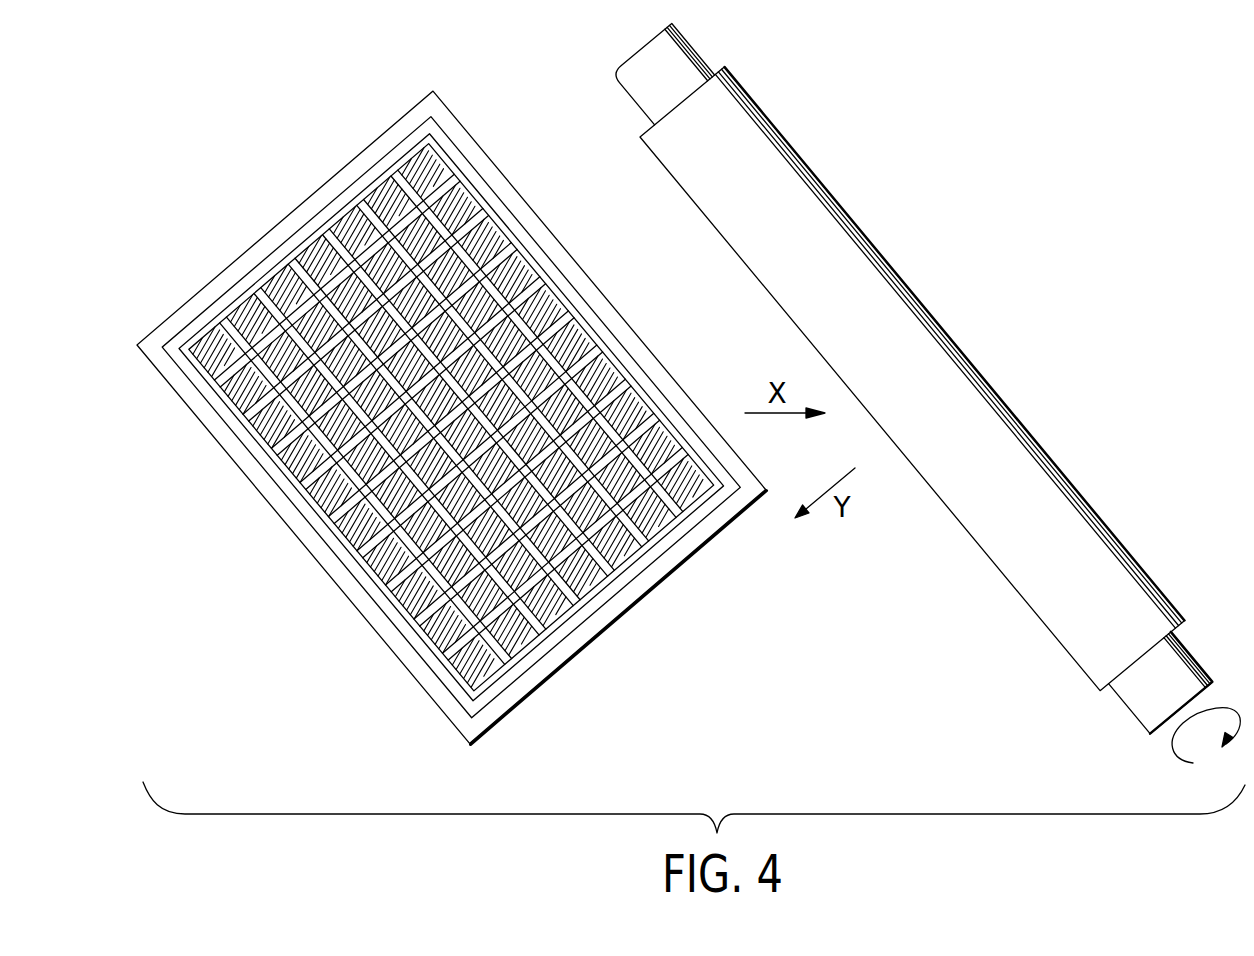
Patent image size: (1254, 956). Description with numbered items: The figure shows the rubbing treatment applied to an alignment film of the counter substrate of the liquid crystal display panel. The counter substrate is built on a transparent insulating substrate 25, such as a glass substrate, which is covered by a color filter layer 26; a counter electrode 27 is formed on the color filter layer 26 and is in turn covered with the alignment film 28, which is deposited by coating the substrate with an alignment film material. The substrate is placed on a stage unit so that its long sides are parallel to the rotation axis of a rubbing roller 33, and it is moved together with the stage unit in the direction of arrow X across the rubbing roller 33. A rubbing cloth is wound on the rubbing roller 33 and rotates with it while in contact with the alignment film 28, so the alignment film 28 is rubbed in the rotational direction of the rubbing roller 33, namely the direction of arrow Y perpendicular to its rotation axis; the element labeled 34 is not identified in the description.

The transparent insulating substrate 25 is at (268, 500).
The color filter layer 26 is at (458, 177).
The counter electrode 27 is at (243, 273).
The alignment film 28 is at (338, 203).
The rubbing roller 33 is at (1075, 467).
The rubbing cloth 34 is at (930, 320).